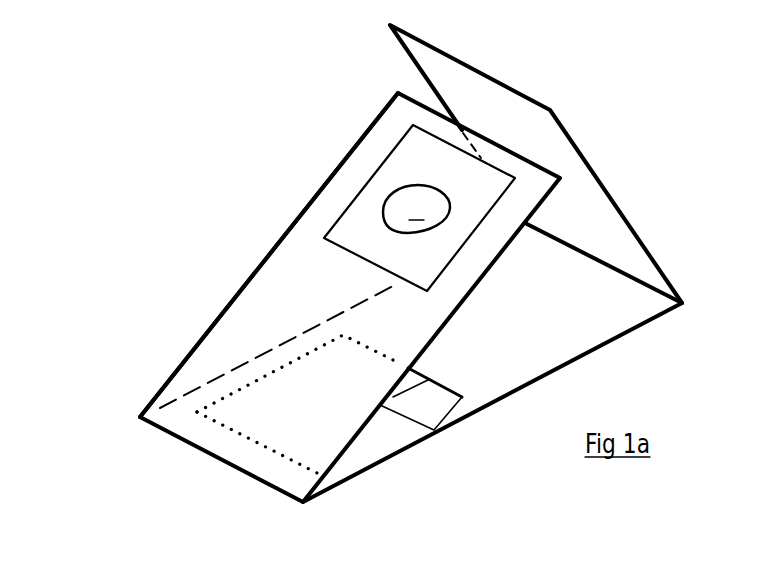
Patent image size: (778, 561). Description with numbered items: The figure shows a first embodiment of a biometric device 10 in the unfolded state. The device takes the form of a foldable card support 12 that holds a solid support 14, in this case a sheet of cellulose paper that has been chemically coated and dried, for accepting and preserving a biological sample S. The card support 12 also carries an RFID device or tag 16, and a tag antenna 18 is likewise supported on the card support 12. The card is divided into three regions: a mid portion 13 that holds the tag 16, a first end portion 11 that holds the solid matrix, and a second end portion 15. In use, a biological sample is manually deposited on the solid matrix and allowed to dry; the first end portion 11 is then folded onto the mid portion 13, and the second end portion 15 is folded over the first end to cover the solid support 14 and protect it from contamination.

The biometric device 10 is at (108, 165).
The first end portion 11 is at (277, 336).
The foldable card support 12 is at (193, 347).
The mid portion 13 is at (561, 318).
The solid support 14 is at (423, 158).
The second end portion 15 is at (533, 131).
The RFID tag 16 is at (378, 425).
The tag antenna 18 is at (418, 389).